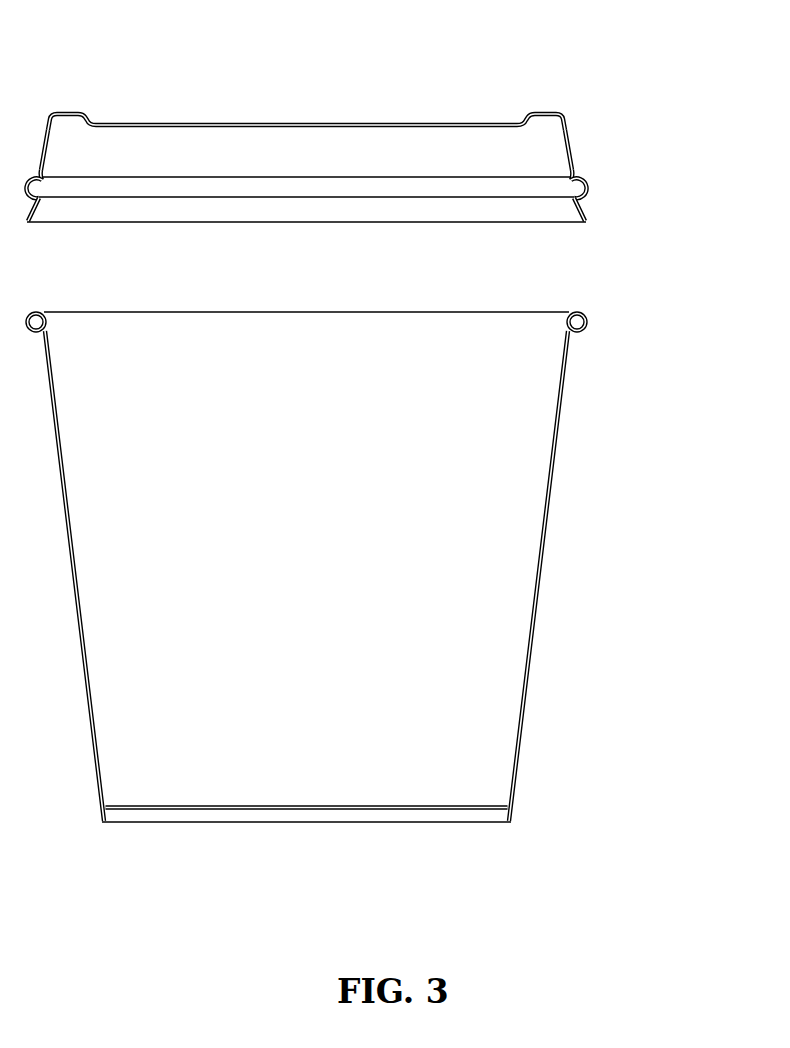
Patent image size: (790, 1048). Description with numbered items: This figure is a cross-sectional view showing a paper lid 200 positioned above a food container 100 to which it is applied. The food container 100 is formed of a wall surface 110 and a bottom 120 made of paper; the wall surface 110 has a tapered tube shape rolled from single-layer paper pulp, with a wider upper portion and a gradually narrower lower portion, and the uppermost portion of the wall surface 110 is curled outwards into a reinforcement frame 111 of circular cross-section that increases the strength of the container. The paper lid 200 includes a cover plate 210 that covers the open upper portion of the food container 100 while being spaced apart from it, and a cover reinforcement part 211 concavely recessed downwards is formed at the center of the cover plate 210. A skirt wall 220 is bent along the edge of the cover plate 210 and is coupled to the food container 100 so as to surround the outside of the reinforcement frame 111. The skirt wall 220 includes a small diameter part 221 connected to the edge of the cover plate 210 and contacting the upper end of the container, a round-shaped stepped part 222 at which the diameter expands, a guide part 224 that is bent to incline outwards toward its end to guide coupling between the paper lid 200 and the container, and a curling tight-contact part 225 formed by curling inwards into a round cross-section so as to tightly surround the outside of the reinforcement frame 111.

The food container 100 is at (362, 589).
The wall surface 110 is at (548, 512).
The reinforcement frame 111 is at (587, 316).
The bottom 120 is at (368, 812).
The paper lid 200 is at (387, 124).
The cover plate 210 is at (69, 110).
The cover reinforcement part 211 is at (343, 122).
The skirt wall 220 is at (387, 171).
The small diameter part 221 is at (563, 130).
The stepped part 222 is at (573, 173).
The curling tight-contact part 225 is at (590, 186).
The guide part 224 is at (583, 213).